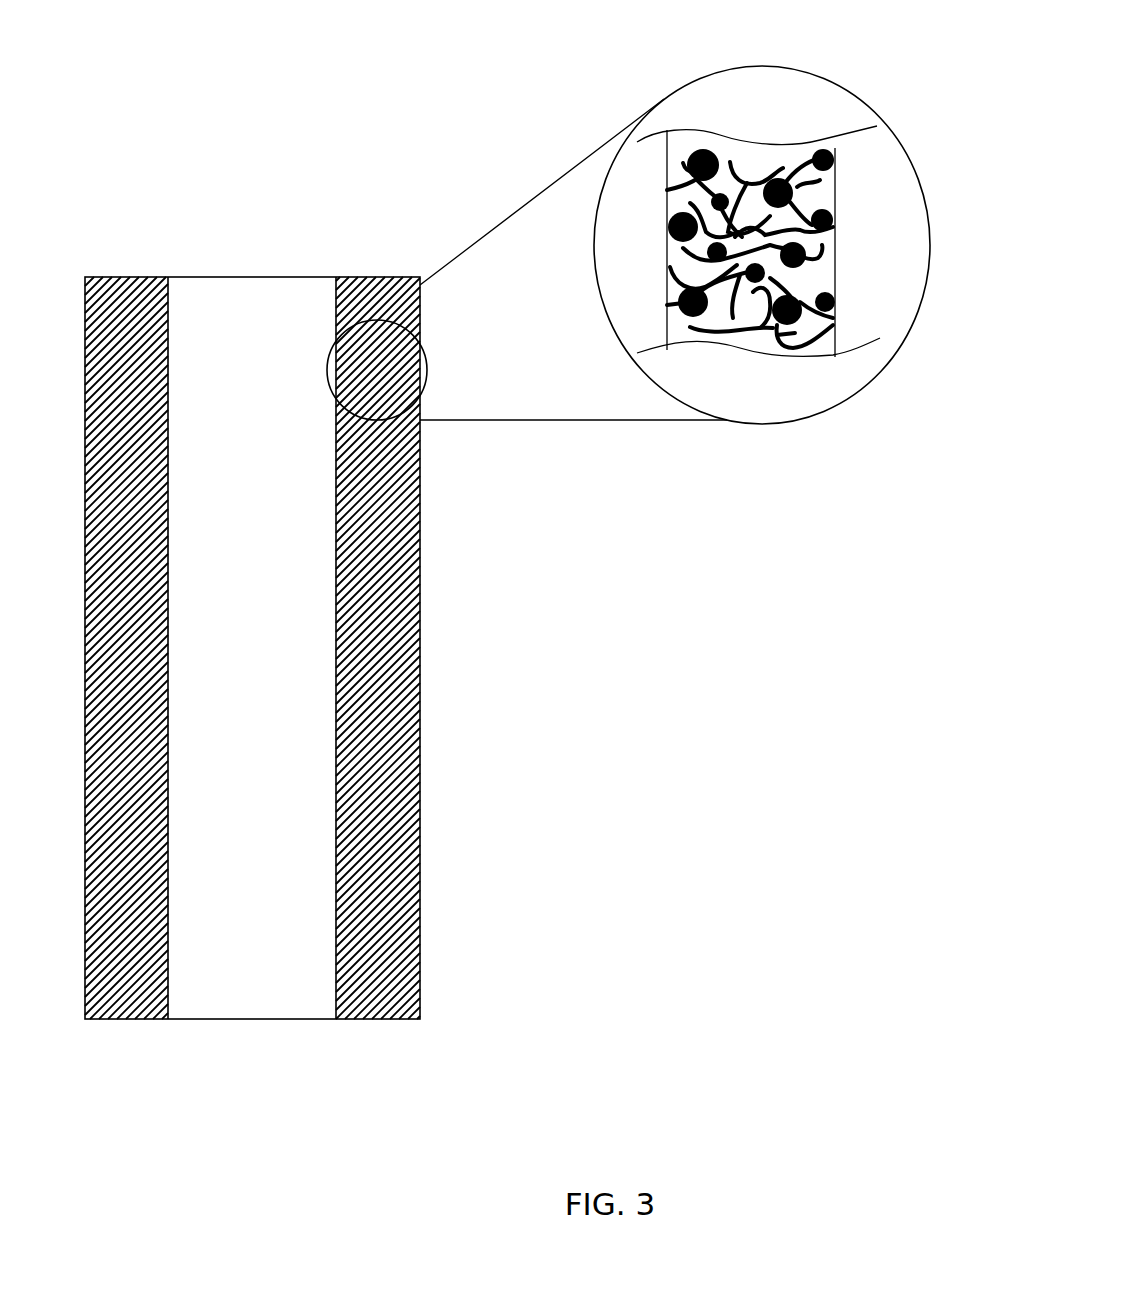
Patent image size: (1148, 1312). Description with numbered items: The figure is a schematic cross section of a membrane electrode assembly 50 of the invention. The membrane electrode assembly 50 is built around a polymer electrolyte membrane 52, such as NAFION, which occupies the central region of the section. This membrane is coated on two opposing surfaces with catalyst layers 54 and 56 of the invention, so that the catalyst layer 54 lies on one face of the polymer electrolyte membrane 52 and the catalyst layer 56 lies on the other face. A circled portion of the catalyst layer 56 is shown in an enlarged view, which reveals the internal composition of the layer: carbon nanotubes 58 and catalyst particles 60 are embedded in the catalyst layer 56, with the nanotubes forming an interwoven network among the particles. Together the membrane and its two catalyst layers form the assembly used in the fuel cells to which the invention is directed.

The membrane electrode assembly 50 is at (255, 205).
The polymer electrolyte membrane 52 is at (275, 980).
The catalyst layer 54 is at (125, 980).
The catalyst layer 56 is at (393, 980).
The carbon nanotubes 58 is at (795, 353).
The catalyst particles 60 is at (707, 138).